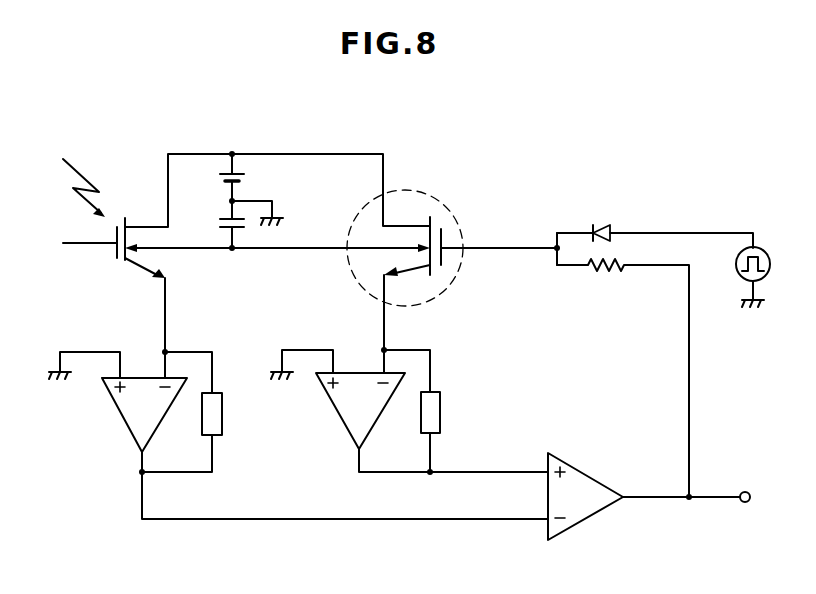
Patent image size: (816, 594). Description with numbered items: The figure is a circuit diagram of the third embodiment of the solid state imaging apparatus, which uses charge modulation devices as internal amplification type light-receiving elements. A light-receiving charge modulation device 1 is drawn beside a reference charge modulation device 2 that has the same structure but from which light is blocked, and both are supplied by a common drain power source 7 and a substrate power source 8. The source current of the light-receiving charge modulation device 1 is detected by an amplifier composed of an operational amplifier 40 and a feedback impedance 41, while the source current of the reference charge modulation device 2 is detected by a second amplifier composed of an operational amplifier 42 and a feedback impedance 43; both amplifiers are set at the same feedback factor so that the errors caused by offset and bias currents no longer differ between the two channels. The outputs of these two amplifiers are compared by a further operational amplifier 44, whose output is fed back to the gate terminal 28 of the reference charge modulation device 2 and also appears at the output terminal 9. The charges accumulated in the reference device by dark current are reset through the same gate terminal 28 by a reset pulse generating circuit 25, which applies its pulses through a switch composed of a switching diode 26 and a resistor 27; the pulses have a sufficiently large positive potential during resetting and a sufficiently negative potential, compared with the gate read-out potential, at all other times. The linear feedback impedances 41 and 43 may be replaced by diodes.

The light-receiving charge modulation device 1 is at (120, 283).
The reference charge modulation device 2 is at (456, 273).
The drain power source 7 is at (247, 178).
The substrate power source 8 is at (217, 226).
The output terminal 9 is at (745, 503).
The reset pulse generating circuit 25 is at (737, 278).
The switching diode 26 is at (610, 228).
The resistor 27 is at (608, 275).
The gate terminal 28 is at (507, 244).
The operational amplifier 40 is at (117, 415).
The feedback impedance 41 is at (225, 417).
The operational amplifier 42 is at (341, 422).
The feedback impedance 43 is at (442, 412).
The operational amplifier 44 is at (596, 511).